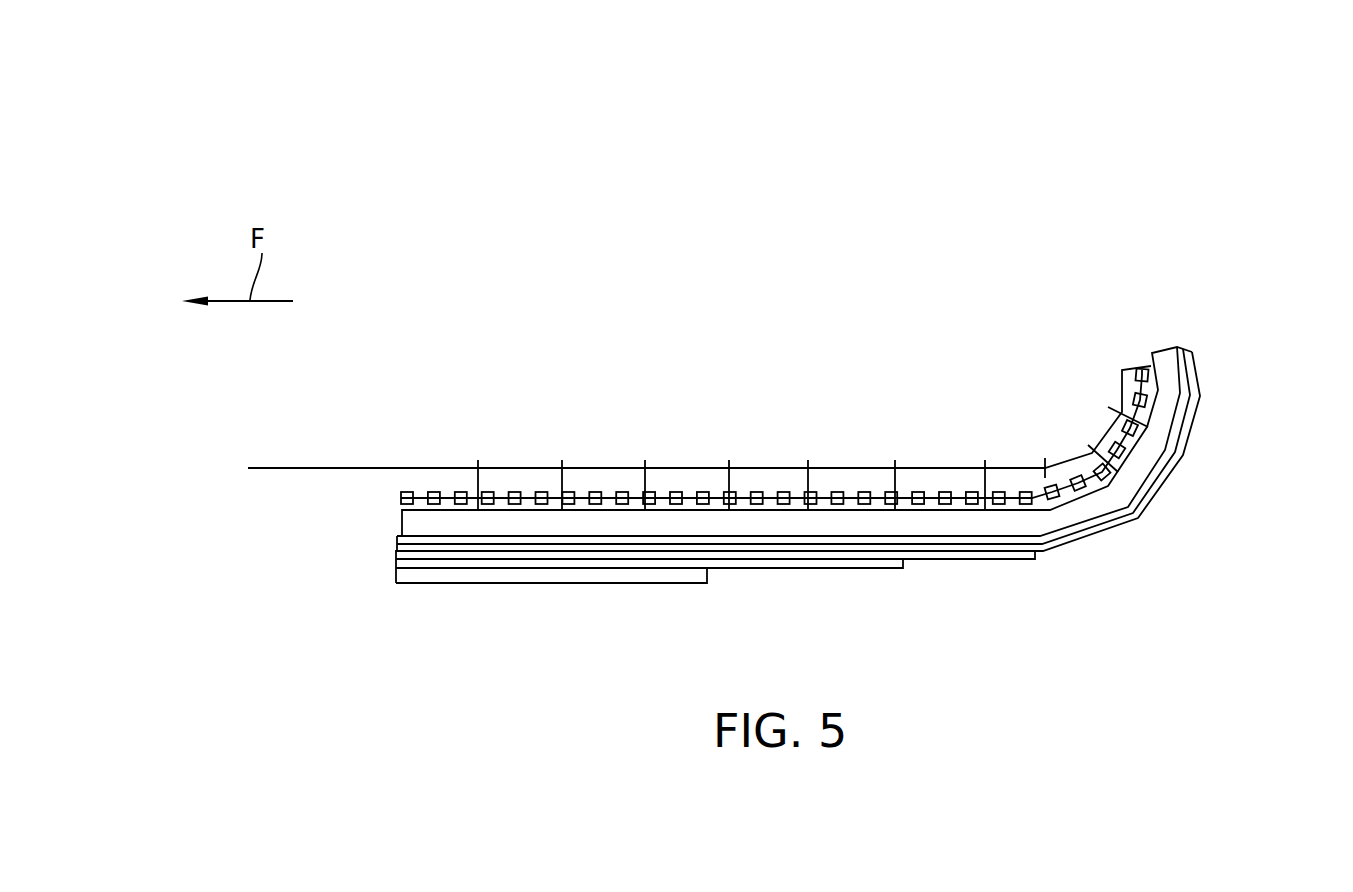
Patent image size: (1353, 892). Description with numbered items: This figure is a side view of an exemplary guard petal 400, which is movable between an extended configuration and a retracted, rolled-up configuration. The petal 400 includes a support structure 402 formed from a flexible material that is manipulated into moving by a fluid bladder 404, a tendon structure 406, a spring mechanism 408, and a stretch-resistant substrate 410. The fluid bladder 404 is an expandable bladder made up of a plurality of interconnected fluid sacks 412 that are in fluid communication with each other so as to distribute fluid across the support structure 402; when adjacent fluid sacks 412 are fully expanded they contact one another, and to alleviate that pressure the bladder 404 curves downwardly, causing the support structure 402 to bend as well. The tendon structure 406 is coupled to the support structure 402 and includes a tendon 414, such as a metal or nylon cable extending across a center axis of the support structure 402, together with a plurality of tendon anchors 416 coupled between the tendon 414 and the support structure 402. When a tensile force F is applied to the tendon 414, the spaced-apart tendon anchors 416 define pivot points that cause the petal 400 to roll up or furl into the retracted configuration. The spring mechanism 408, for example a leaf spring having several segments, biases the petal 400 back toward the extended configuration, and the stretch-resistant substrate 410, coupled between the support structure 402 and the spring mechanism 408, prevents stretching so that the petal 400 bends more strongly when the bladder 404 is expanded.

The guard petal 400 is at (140, 192).
The support structure 402 is at (1163, 408).
The fluid bladder 404 is at (348, 499).
The tendon structure 406 is at (325, 418).
The spring mechanism 408 is at (708, 573).
The stretch-resistant substrate 410 is at (1072, 530).
The fluid sacks 412 is at (618, 486).
The tendon 414 is at (272, 468).
The tendon anchors 416 is at (478, 476).